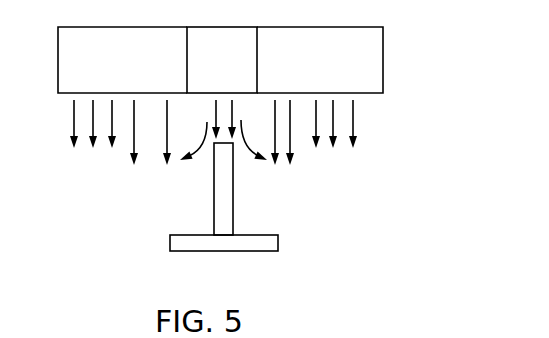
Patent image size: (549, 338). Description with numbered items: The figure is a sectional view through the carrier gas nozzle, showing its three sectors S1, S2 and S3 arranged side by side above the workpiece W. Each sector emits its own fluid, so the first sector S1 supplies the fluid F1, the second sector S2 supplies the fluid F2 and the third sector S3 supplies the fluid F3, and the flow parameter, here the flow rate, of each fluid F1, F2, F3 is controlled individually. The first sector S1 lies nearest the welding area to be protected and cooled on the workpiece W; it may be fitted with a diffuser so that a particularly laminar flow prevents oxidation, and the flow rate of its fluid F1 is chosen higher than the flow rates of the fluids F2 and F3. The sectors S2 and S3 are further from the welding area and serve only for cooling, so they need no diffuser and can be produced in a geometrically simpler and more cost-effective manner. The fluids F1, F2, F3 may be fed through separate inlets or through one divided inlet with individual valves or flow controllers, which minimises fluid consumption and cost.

The workpiece W is at (272, 242).
The first sector S1 is at (222, 60).
The second sector S2 is at (320, 60).
The third sector S3 is at (122, 60).
The fluid of the first sector F1 is at (253, 153).
The fluid of the second sector F2 is at (356, 153).
The fluid of the third sector F3 is at (113, 153).